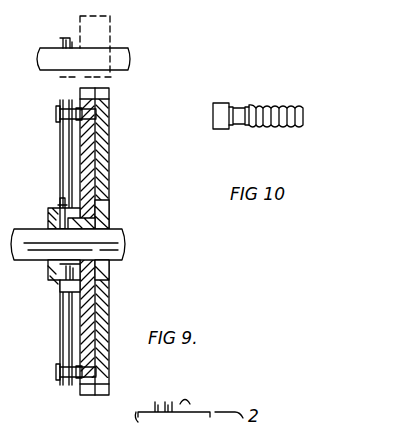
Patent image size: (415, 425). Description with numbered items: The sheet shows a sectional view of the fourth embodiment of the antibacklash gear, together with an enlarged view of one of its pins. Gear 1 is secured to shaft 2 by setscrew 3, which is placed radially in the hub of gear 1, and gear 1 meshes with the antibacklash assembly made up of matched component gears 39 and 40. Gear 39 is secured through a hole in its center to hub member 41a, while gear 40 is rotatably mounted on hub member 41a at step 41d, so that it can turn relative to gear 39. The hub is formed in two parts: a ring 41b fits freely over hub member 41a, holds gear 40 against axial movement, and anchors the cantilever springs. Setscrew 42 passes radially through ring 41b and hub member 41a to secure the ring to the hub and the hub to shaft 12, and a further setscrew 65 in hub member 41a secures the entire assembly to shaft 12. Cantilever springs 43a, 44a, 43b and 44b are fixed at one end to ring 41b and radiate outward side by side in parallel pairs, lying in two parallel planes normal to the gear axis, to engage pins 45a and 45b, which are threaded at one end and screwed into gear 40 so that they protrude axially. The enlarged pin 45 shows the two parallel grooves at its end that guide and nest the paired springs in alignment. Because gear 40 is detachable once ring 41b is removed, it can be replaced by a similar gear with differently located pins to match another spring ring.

In FIG. 9, the gear 1 is at (112, 46).
In FIG. 9, the shaft 2 is at (40, 50).
In FIG. 9, the setscrew 3 is at (66, 38).
In FIG. 9, the shaft 12 is at (30, 260).
In FIG. 9, the component gear 39 is at (104, 136).
In FIG. 9, the component gear 40 is at (88, 183).
In FIG. 9, the hub member 41a is at (110, 223).
In FIG. 9, the hub member ring 41b is at (48, 212).
In FIG. 9, the step 41d is at (96, 284).
In FIG. 9, the setscrew 42 is at (56, 208).
In FIG. 9, the cantilever spring 43a is at (60, 101).
In FIG. 9, the cantilever spring 43b is at (61, 378).
In FIG. 9, the cantilever spring 44a is at (70, 100).
In FIG. 9, the cantilever spring 44b is at (70, 385).
In FIG. 10, the pin 45 is at (268, 104).
In FIG. 9, the pin 45a is at (57, 118).
In FIG. 10, the pin 45a is at (238, 104).
In FIG. 9, the pin 45b is at (56, 371).
In FIG. 9, the setscrew 65 is at (50, 288).